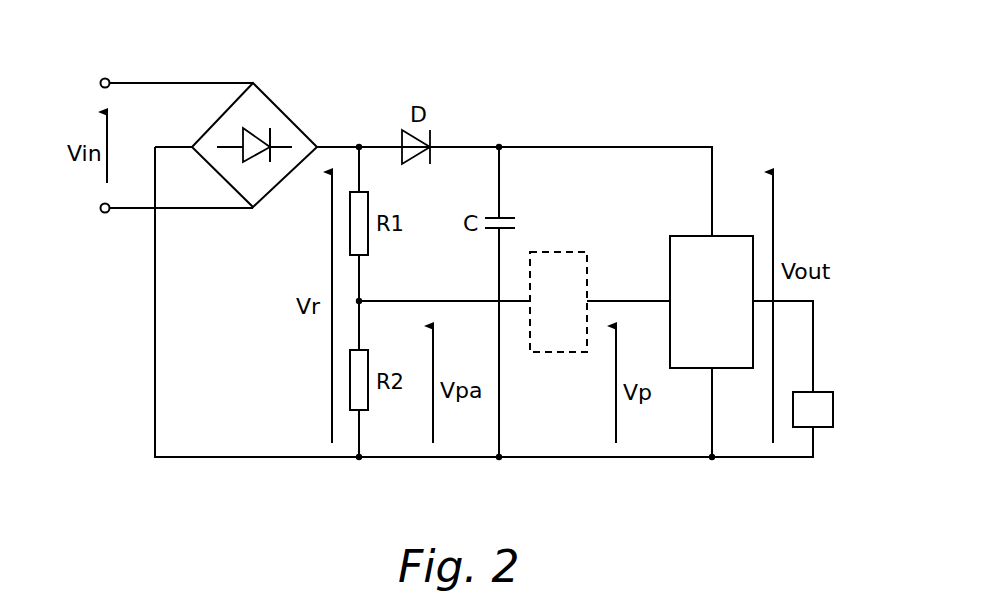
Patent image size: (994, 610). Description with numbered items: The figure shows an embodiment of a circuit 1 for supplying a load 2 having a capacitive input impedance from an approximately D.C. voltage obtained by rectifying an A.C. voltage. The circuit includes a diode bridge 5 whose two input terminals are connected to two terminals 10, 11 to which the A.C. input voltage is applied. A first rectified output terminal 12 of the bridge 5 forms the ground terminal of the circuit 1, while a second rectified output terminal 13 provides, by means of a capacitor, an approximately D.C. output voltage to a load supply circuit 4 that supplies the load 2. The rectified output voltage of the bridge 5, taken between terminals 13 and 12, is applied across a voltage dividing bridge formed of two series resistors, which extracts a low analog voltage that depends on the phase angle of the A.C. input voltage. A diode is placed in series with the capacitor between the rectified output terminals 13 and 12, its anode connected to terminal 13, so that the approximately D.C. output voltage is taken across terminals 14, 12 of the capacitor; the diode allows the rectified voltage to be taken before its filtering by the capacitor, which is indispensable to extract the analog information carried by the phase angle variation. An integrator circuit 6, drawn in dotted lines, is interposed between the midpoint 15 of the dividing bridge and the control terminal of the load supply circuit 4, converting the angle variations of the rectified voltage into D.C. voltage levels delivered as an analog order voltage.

The circuit 1 is at (444, 78).
The load 2 is at (834, 408).
The load supply circuit 4 is at (733, 235).
The diode bridge 5 is at (288, 114).
The integrator circuit 6 is at (567, 251).
The terminal 10 is at (103, 78).
The terminal 11 is at (104, 212).
The first rectified output terminal 12 is at (188, 146).
The second rectified output terminal 13 is at (331, 145).
The terminal 14 is at (503, 143).
The midpoint 15 is at (361, 298).